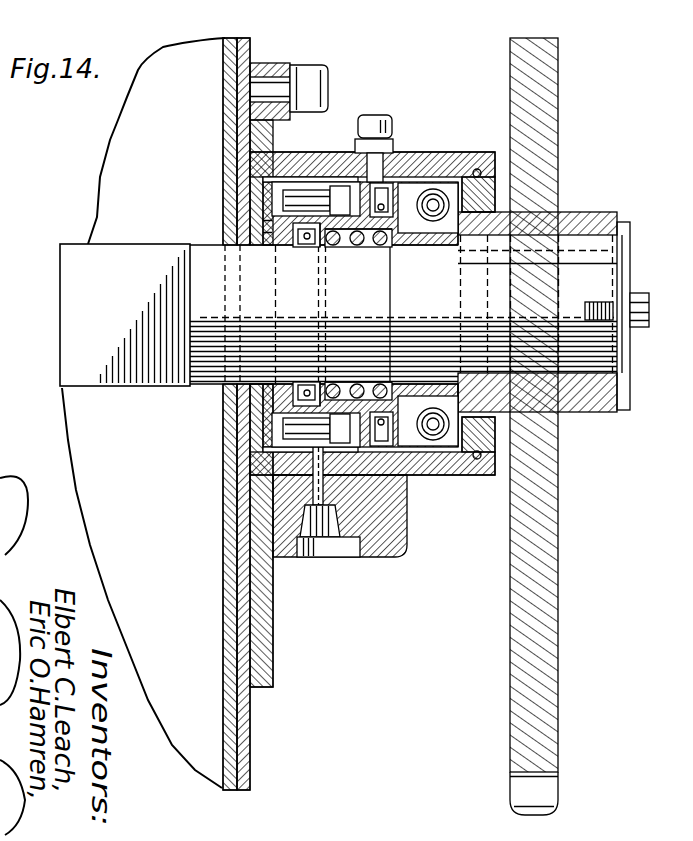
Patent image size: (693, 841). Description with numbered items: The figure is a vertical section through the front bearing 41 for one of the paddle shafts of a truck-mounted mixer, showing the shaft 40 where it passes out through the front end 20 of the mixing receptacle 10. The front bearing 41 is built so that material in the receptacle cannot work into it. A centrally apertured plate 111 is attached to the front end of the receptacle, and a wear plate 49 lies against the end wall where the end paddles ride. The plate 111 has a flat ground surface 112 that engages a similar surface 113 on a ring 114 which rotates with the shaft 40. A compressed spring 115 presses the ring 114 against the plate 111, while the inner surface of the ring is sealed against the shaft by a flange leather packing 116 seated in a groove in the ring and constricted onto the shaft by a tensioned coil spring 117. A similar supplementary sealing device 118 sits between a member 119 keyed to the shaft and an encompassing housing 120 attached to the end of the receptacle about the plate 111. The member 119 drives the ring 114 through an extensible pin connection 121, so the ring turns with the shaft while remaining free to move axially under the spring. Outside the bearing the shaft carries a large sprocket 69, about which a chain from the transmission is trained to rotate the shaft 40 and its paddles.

The mixing receptacle 10 is at (98, 174).
The centrally apertured plate 111 is at (223, 190).
The front end 20 is at (247, 730).
The wear plate 49 is at (228, 538).
The paddle shaft 40 is at (597, 283).
The large sprocket 69 is at (556, 645).
The housing 120 is at (440, 153).
The front bearing 41 is at (400, 150).
The extensible pin connection 121 is at (308, 195).
The flat ground surface 112 is at (268, 245).
The ground surface 113 is at (306, 247).
The ring 114 is at (335, 245).
The compressed spring 115 is at (361, 244).
The flange leather packing 116 is at (318, 250).
The tensioned coil spring 117 is at (232, 400).
The supplementary sealing device 118 is at (391, 220).
The member keyed to the shaft 119 is at (408, 474).